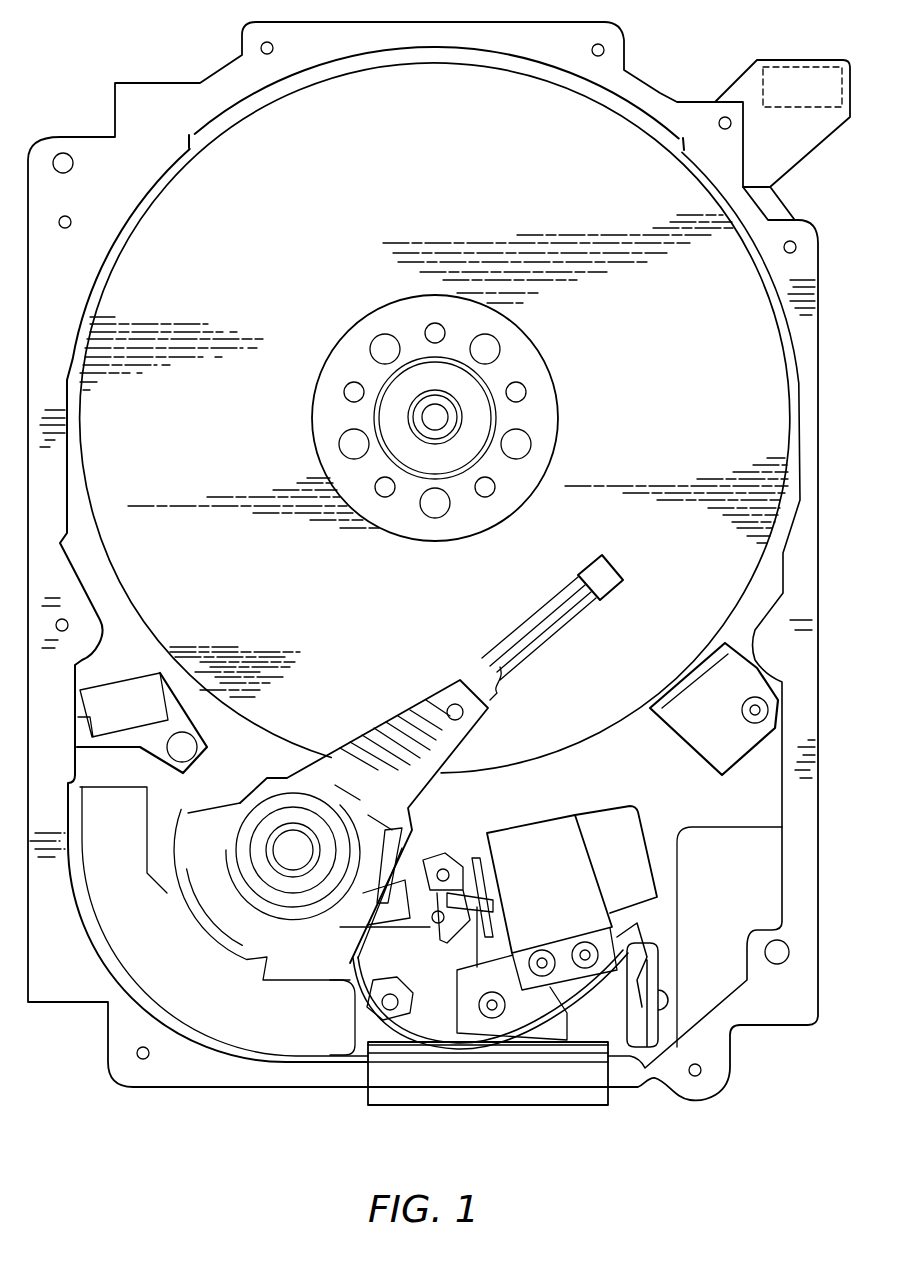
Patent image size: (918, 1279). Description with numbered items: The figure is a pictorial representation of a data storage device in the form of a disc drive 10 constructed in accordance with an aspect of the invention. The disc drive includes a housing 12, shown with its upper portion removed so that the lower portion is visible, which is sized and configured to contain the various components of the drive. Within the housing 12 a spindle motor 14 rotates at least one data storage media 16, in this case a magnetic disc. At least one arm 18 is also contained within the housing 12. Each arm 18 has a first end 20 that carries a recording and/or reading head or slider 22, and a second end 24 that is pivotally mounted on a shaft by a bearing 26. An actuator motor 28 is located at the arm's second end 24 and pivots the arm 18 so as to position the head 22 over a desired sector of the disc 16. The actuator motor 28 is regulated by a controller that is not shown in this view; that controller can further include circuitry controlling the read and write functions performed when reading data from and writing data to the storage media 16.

The disc drive 10 is at (72, 86).
The housing 12 is at (573, 37).
The spindle motor 14 is at (428, 420).
The data storage media 16 is at (344, 201).
The arm 18 is at (415, 723).
The first end 20 is at (540, 608).
The head 22 is at (600, 573).
The second end 24 is at (322, 787).
The bearing 26 is at (283, 840).
The actuator motor 28 is at (180, 972).